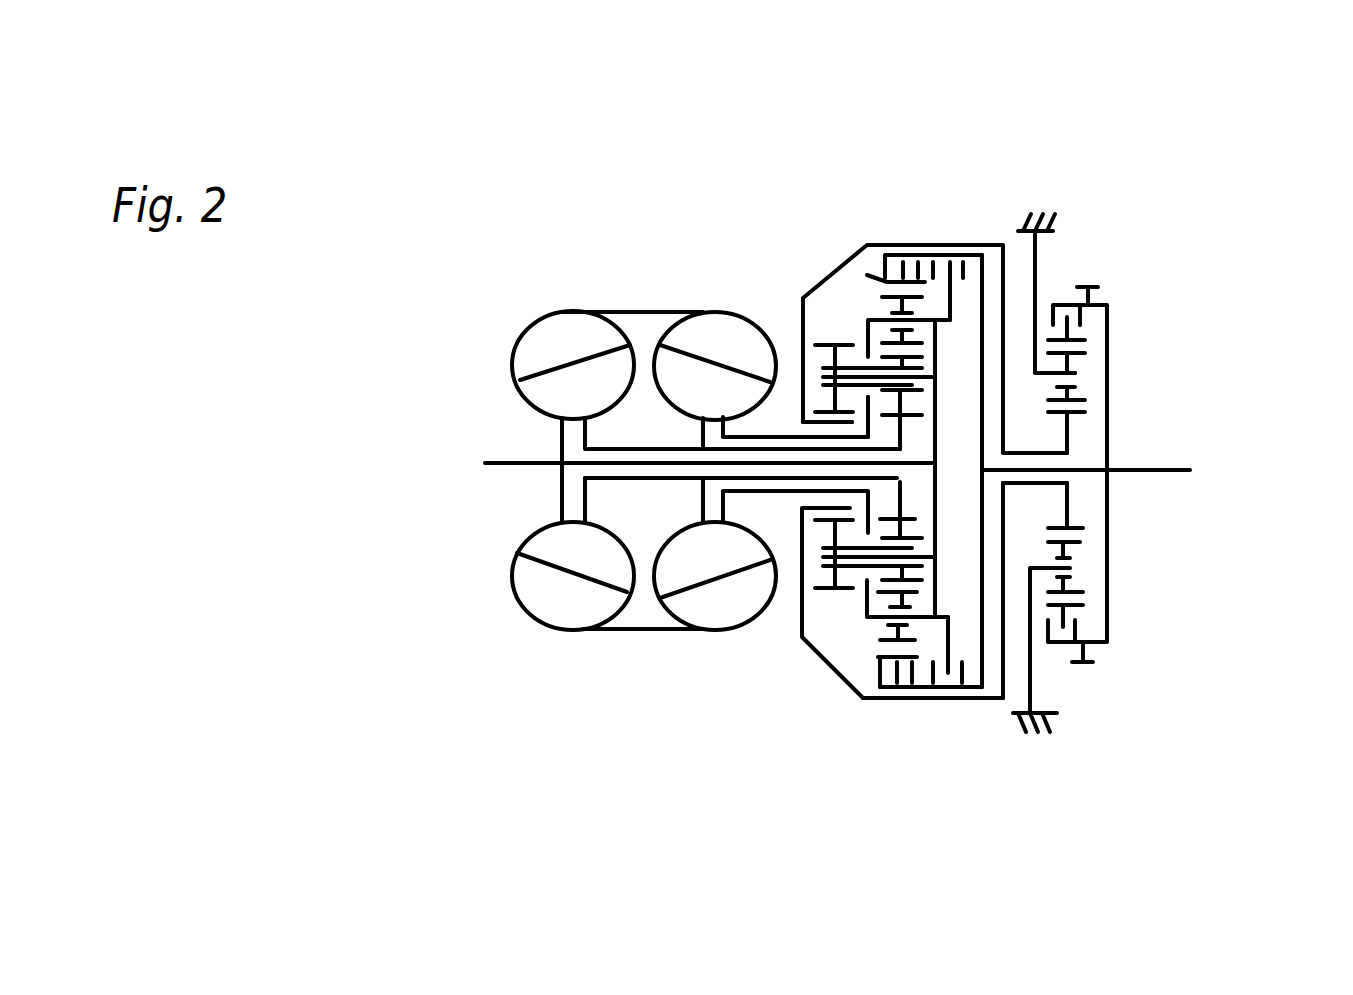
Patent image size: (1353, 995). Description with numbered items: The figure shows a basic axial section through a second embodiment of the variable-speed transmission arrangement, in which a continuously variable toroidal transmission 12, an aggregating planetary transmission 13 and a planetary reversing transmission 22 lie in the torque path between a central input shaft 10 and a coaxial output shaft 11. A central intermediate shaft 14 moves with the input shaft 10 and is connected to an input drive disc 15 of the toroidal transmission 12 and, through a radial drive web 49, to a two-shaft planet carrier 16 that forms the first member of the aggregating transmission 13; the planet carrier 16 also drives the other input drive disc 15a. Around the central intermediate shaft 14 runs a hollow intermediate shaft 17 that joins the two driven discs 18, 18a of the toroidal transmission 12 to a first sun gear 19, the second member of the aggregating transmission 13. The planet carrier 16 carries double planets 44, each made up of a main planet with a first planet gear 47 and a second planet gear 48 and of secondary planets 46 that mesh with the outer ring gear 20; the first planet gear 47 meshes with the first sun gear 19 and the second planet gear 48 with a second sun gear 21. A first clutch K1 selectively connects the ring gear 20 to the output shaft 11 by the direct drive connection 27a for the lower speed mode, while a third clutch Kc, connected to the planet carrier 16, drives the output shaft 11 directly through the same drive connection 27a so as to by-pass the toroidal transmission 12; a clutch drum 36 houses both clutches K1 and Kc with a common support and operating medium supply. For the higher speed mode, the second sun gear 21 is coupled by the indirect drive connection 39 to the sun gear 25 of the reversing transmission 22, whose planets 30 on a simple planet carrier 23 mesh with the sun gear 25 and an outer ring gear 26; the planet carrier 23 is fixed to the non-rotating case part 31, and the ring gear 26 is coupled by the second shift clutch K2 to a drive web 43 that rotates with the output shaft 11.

The input shaft 10 is at (638, 422).
The output shaft 11 is at (1146, 512).
The continuously variable toroidal transmission 12 is at (632, 325).
The aggregating planetary transmission 13 is at (934, 360).
The central intermediate shaft 14 is at (615, 387).
The input drive disc 15 is at (521, 253).
The other input drive disc 15a is at (655, 699).
The two-shaft planet carrier 16 is at (773, 728).
The hollow intermediate shaft 17 is at (620, 615).
The driven disc 18 is at (647, 253).
The driven disc 18a is at (774, 268).
The first sun gear 19 is at (998, 268).
The outer ring gear 20 is at (899, 372).
The second sun gear 21 is at (800, 254).
The planetary reversing transmission 22 is at (1100, 200).
The planet carrier 23 is at (1182, 404).
The sun gear 25 is at (1180, 410).
The outer ring gear 26 is at (1180, 292).
The direct drive connection 27a is at (1156, 370).
The planets 30 is at (1180, 344).
The non-rotating case part 31 is at (1064, 794).
The clutch drum 36 is at (939, 387).
The indirect drive connection 39 is at (1153, 557).
The drive web 43 is at (1183, 652).
The double planets 44 is at (960, 352).
The secondary planets 46 is at (802, 698).
The first planet gear 47 is at (948, 679).
The second planet gear 48 is at (872, 249).
The radial drive web 49 is at (638, 699).
The first clutch K1 is at (907, 787).
The second shift clutch K2 is at (1181, 690).
The third clutch Kc is at (931, 781).